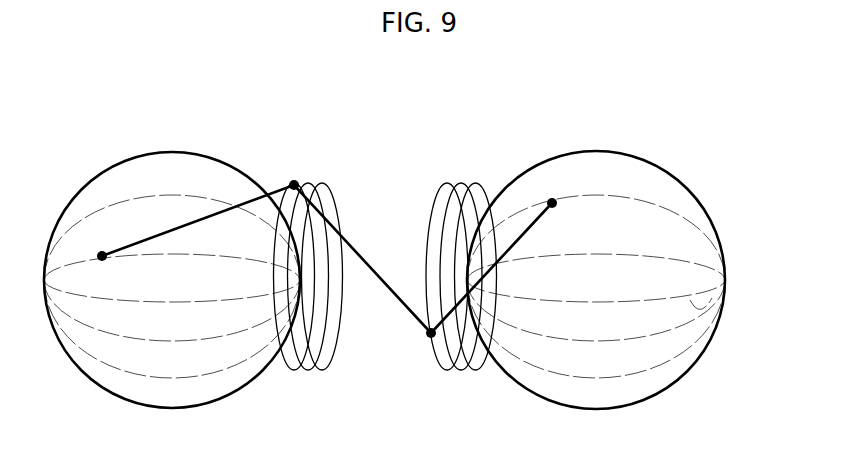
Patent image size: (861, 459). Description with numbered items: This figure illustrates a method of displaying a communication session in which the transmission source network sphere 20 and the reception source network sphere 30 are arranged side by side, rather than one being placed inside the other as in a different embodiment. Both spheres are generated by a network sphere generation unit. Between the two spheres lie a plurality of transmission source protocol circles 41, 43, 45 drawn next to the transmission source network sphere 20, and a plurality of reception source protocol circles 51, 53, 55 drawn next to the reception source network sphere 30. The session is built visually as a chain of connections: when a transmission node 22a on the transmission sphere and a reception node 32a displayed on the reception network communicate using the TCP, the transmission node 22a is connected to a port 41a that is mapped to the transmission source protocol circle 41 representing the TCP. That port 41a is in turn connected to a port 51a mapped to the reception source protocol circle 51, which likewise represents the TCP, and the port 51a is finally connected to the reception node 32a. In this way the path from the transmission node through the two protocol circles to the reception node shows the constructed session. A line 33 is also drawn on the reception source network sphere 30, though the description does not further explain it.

The transmission source network sphere 20 is at (177, 152).
The transmission node 22a is at (100, 252).
The reception source network sphere 30 is at (652, 160).
The reception node 32a is at (556, 198).
The surface line of second sphere 33 is at (712, 298).
The transmission source protocol circle 41 is at (294, 370).
The port 41a is at (294, 180).
The transmission source protocol circle 43 is at (308, 370).
The transmission source protocol circle 45 is at (322, 370).
The reception source protocol circle 51 is at (447, 370).
The port 51a is at (430, 335).
The reception source protocol circle 53 is at (461, 370).
The reception source protocol circle 55 is at (476, 370).